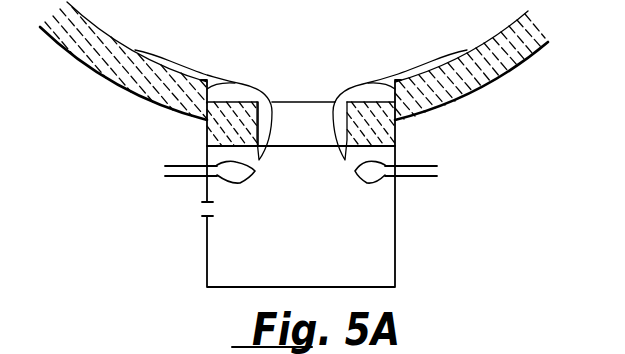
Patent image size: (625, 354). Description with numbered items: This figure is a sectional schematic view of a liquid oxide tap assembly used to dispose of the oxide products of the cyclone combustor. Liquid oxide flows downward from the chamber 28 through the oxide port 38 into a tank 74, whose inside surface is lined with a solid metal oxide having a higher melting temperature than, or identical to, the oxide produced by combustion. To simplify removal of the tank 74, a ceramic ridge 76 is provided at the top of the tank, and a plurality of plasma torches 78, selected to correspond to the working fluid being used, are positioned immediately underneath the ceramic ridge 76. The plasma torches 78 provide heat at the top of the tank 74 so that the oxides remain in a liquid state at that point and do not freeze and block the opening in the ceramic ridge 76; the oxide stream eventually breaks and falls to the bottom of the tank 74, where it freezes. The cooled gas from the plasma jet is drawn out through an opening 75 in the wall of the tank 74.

The chamber 28 is at (326, 32).
The oxide port 38 is at (220, 82).
The tank 74 is at (397, 241).
The opening 75 is at (205, 209).
The ceramic ridge 76 is at (248, 102).
The plasma torches 78 is at (243, 181).